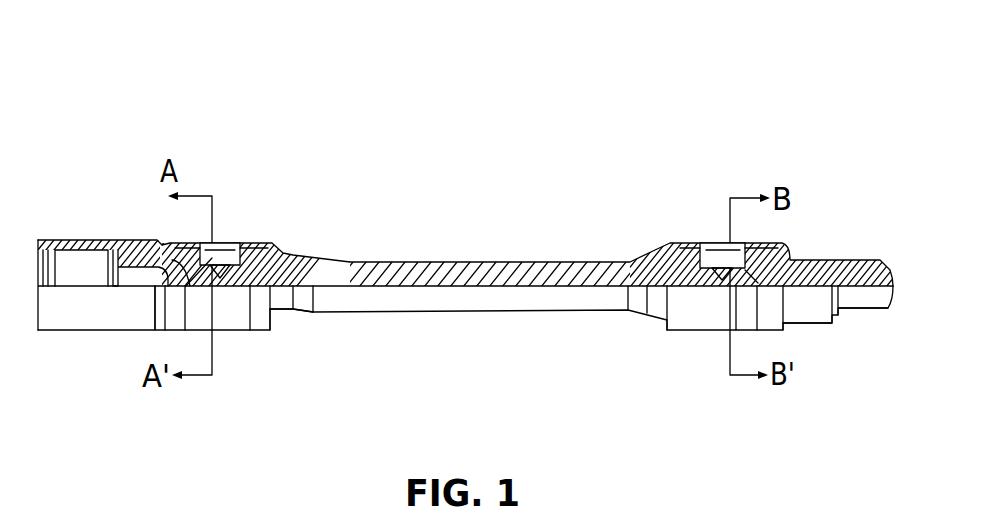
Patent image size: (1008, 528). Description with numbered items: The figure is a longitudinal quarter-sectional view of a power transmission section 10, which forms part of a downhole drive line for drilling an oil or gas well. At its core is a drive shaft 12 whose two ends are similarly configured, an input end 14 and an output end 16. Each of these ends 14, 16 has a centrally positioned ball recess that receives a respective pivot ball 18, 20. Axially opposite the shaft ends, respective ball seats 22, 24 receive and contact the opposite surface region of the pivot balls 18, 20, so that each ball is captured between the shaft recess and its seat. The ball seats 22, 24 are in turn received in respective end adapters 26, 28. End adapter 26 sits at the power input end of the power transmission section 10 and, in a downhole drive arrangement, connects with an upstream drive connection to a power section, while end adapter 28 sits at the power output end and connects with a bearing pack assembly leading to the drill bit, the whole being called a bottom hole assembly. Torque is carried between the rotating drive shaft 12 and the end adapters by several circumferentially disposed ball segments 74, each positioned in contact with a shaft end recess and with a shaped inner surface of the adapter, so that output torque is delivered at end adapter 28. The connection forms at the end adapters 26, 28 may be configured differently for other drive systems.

The power transmission section 10 is at (412, 152).
The drive shaft 12 is at (484, 262).
The input end 14 is at (688, 330).
The output end 16 is at (250, 330).
The pivot ball 18 is at (728, 330).
The pivot ball 20 is at (212, 333).
The ball seat 22 is at (753, 287).
The ball seat 24 is at (185, 287).
The end adapter 26 is at (857, 297).
The end adapter 28 is at (122, 302).
The ball segments 74 is at (222, 242).